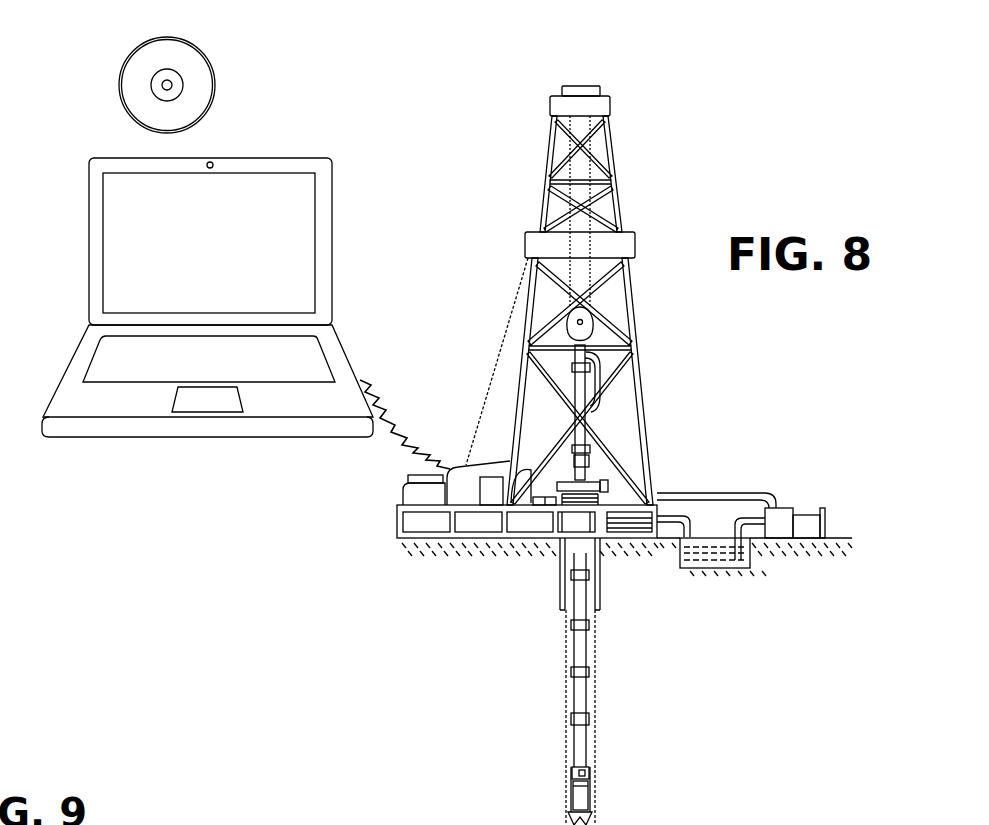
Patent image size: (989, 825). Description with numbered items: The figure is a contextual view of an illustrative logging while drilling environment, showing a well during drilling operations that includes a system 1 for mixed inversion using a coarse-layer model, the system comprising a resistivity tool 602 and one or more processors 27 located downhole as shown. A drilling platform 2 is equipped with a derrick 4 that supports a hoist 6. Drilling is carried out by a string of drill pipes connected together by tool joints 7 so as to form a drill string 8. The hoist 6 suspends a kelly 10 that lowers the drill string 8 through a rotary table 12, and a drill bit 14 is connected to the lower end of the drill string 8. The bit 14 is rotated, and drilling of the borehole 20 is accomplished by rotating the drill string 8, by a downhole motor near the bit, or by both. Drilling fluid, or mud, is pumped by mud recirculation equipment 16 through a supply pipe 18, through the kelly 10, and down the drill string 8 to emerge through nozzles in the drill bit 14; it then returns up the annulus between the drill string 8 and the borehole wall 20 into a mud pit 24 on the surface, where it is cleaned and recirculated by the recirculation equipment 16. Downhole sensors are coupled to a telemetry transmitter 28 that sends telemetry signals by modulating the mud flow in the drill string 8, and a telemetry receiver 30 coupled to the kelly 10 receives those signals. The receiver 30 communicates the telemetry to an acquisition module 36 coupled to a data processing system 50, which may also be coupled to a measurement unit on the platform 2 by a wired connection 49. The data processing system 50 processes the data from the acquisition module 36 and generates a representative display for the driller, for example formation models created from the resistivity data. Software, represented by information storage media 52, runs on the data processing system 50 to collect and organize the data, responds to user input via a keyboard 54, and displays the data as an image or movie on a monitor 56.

The system 1 is at (545, 733).
The drilling platform 2 is at (400, 510).
The derrick 4 is at (619, 212).
The hoist 6 is at (597, 325).
The tool joints 7 is at (569, 623).
The drill string 8 is at (574, 634).
The kelly 10 is at (585, 385).
The rotary table 12 is at (600, 484).
The drill bit 14 is at (591, 818).
The mud recirculation equipment 16 is at (773, 510).
The supply pipe 18 is at (725, 496).
The borehole 20 is at (596, 632).
The mud pit 24 is at (751, 562).
The processors 27 is at (574, 772).
The telemetry transmitter 28 is at (588, 780).
The telemetry receiver 30 is at (590, 448).
The acquisition module 36 is at (497, 477).
The wired connection 49 is at (396, 430).
The data processing system 50 is at (194, 305).
The information storage media 52 is at (214, 84).
The keyboard 54 is at (316, 378).
The monitor 56 is at (330, 226).
The resistivity tool 602 is at (575, 795).